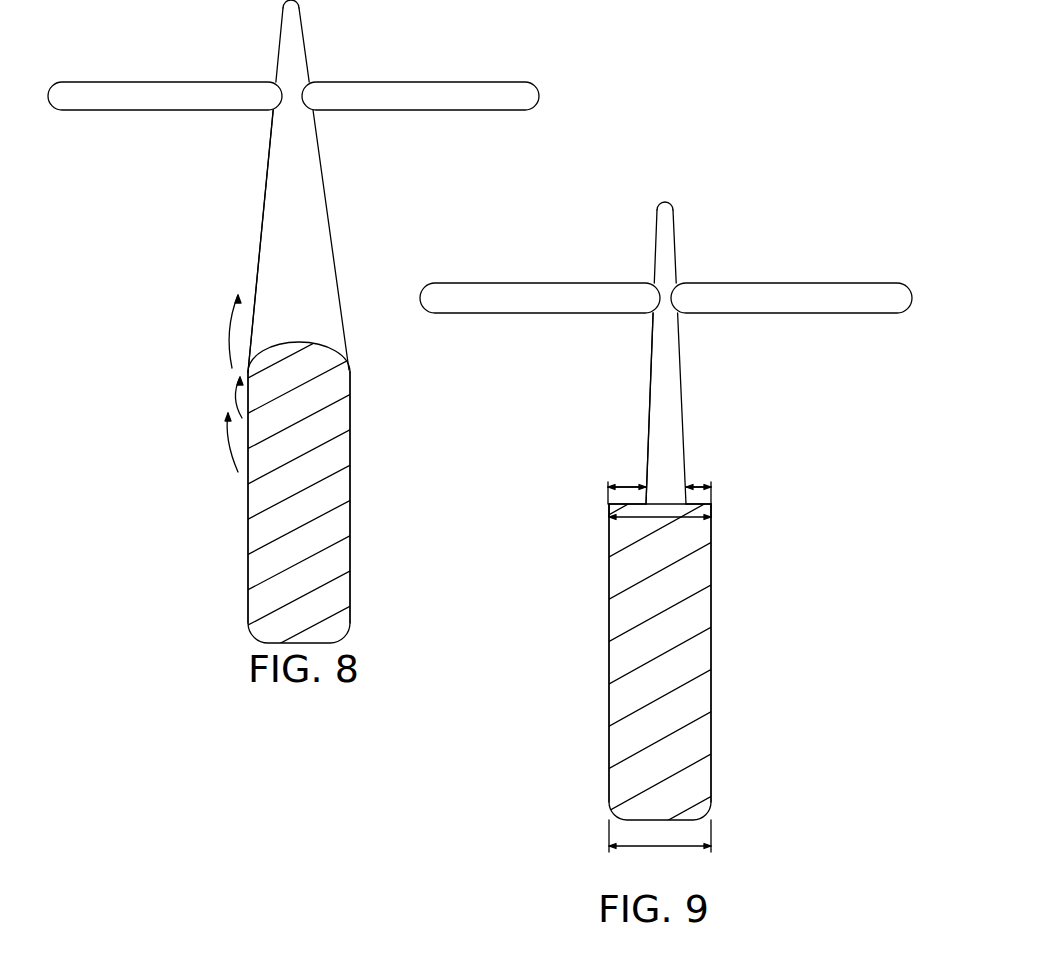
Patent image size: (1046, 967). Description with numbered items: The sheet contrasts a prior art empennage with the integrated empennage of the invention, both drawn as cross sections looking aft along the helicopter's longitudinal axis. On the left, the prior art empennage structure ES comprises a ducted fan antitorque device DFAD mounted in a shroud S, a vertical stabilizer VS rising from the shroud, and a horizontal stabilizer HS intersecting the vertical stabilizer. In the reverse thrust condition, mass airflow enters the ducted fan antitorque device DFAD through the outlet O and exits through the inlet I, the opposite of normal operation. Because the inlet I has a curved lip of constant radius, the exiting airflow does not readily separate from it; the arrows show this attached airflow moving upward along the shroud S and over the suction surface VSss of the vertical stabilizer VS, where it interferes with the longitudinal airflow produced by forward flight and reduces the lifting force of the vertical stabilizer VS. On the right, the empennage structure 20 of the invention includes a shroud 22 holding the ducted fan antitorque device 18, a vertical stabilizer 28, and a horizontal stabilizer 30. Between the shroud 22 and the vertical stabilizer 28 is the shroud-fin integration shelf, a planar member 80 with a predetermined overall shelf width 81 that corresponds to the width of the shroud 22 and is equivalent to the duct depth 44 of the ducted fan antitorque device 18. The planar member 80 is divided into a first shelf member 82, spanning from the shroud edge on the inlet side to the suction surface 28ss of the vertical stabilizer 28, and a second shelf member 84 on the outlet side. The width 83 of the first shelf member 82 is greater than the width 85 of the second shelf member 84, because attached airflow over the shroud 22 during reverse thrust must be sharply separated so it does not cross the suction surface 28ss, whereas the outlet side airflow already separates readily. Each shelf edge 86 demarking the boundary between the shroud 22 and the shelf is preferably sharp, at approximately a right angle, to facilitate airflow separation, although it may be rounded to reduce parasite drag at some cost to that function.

In FIG. 8, the horizontal stabilizer HS is at (383, 110).
In FIG. 8, the vertical stabilizer VS is at (332, 249).
In FIG. 8, the suction surface of the vertical stabilizer VSss is at (259, 247).
In FIG. 8, the shroud S is at (348, 386).
In FIG. 8, the outlet O is at (352, 486).
In FIG. 8, the empennage structure ES is at (355, 531).
In FIG. 8, the inlet I is at (249, 508).
In FIG. 8, the ducted fan antitorque device DFAD is at (242, 575).
In FIG. 9, the horizontal fin or stabilizer 30 is at (757, 285).
In FIG. 9, the vertical fin or stabilizer 28 is at (683, 370).
In FIG. 9, the suction surface of the vertical stabilizer 28ss is at (650, 361).
In FIG. 9, the ducted fan antitorque device 18 is at (713, 700).
In FIG. 9, the empennage structure 20 is at (600, 548).
In FIG. 9, the shroud 22 is at (712, 572).
In FIG. 9, the planar shelf member 80 is at (610, 461).
In FIG. 9, the width of the first shelf member 83 is at (630, 487).
In FIG. 9, the width of the second shelf member 85 is at (697, 487).
In FIG. 9, the overall shelf width 81 is at (658, 517).
In FIG. 9, the first shelf member 82 is at (622, 502).
In FIG. 9, the second shelf member 84 is at (697, 502).
In FIG. 9, the shelf edge 86 is at (610, 503).
In FIG. 9, the duct depth 44 is at (688, 848).